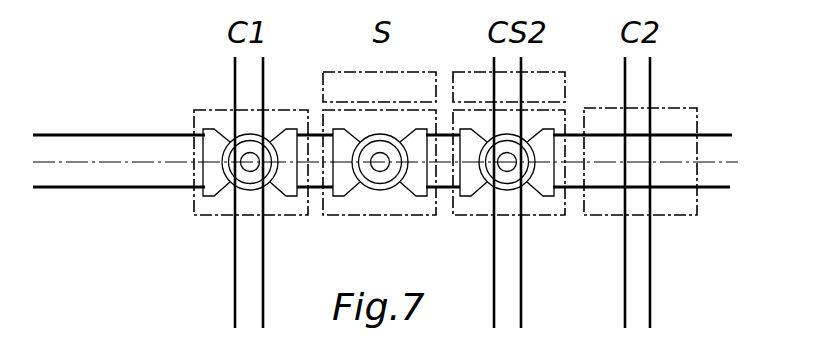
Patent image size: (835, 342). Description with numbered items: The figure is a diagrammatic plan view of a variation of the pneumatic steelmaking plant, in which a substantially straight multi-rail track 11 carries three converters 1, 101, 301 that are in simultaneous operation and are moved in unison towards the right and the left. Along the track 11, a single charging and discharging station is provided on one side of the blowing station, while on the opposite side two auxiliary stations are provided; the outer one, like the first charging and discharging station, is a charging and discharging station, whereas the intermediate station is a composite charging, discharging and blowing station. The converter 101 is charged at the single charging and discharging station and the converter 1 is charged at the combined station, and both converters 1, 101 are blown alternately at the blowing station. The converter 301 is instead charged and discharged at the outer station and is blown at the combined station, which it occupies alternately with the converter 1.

The multi-rail track 11 is at (135, 137).
The converter 101 is at (270, 183).
The converter 1 is at (388, 187).
The converter 301 is at (545, 185).